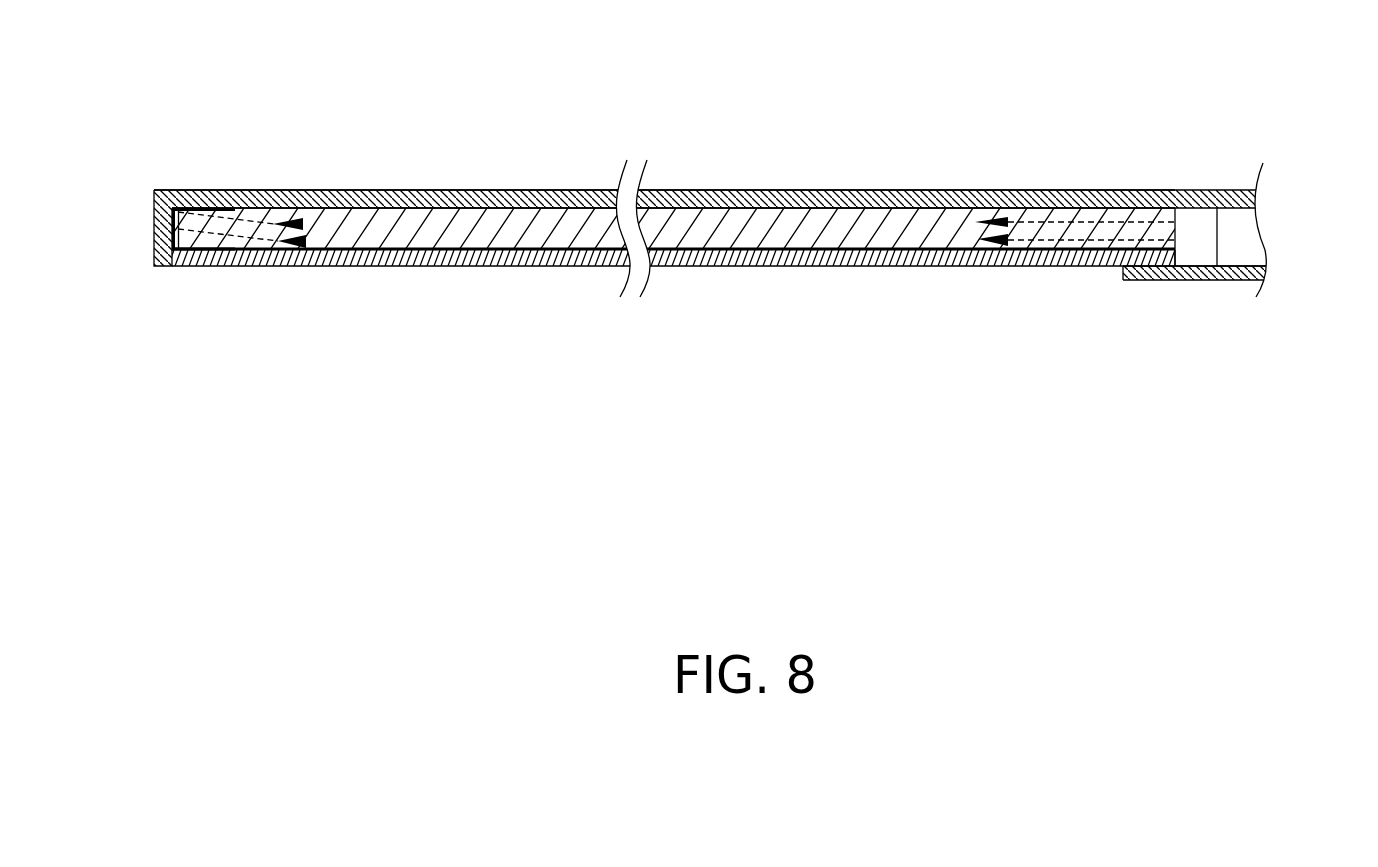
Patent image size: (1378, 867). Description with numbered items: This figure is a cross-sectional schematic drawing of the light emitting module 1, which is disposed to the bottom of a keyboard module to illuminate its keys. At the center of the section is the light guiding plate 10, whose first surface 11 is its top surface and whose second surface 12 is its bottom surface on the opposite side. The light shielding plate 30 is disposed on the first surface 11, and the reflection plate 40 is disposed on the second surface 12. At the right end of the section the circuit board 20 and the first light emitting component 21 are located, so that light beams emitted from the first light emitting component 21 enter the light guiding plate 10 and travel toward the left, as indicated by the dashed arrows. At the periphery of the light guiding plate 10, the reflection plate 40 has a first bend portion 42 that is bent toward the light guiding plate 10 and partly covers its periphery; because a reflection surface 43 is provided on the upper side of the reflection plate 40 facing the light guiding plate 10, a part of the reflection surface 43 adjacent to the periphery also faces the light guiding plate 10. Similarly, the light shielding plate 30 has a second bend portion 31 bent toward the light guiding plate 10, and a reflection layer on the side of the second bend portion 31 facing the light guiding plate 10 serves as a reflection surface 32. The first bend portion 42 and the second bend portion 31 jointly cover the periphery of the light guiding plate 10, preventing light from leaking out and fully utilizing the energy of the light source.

The light emitting module 1 is at (168, 84).
The light guiding plate 10 is at (430, 242).
The first surface 11 is at (528, 208).
The second surface 12 is at (517, 253).
The circuit board 20 is at (1252, 275).
The first light emitting component 21 is at (1198, 245).
The light shielding plate 30 is at (1235, 202).
The second bend portion 31 is at (162, 220).
The reflection surface 32 is at (183, 210).
The reflection plate 40 is at (760, 252).
The first bend portion 42 is at (163, 245).
The reflection surface 43 is at (180, 255).